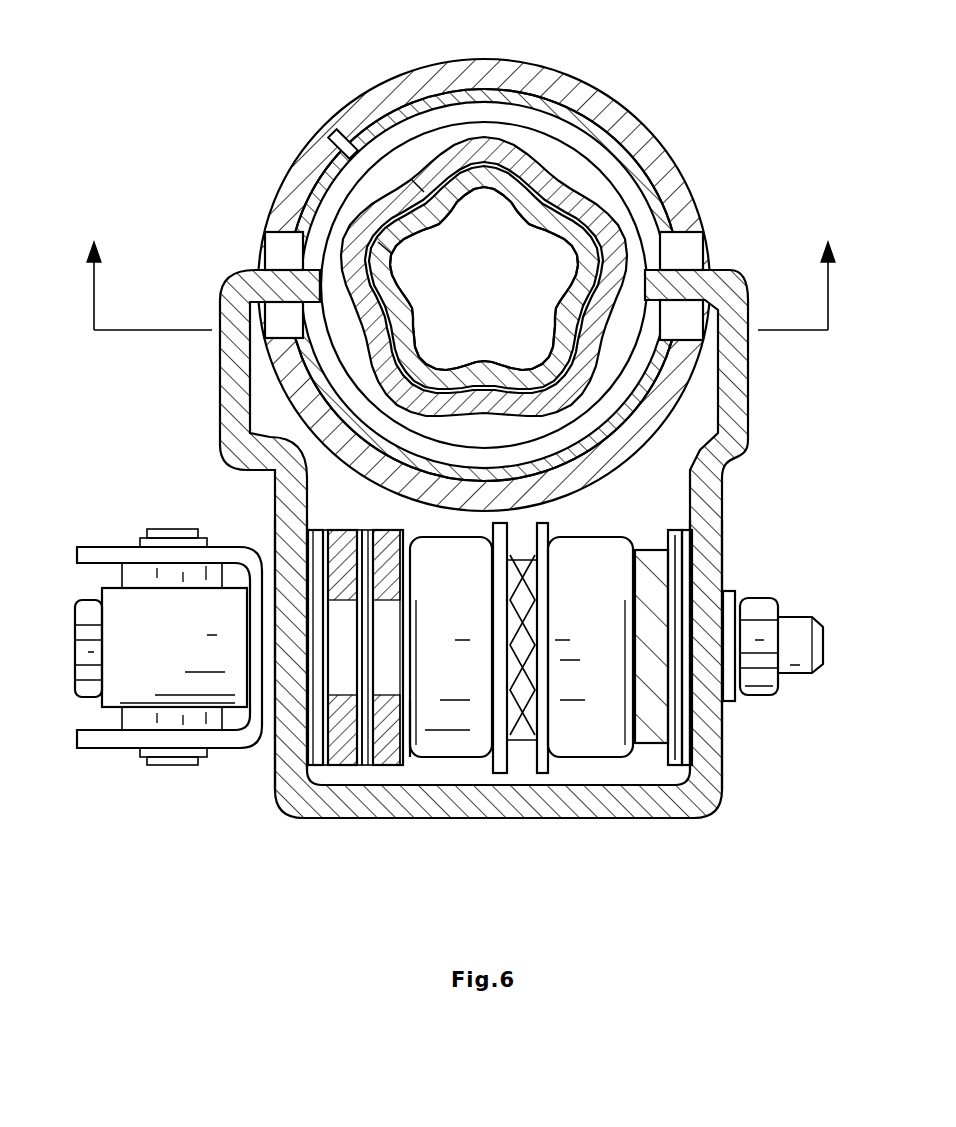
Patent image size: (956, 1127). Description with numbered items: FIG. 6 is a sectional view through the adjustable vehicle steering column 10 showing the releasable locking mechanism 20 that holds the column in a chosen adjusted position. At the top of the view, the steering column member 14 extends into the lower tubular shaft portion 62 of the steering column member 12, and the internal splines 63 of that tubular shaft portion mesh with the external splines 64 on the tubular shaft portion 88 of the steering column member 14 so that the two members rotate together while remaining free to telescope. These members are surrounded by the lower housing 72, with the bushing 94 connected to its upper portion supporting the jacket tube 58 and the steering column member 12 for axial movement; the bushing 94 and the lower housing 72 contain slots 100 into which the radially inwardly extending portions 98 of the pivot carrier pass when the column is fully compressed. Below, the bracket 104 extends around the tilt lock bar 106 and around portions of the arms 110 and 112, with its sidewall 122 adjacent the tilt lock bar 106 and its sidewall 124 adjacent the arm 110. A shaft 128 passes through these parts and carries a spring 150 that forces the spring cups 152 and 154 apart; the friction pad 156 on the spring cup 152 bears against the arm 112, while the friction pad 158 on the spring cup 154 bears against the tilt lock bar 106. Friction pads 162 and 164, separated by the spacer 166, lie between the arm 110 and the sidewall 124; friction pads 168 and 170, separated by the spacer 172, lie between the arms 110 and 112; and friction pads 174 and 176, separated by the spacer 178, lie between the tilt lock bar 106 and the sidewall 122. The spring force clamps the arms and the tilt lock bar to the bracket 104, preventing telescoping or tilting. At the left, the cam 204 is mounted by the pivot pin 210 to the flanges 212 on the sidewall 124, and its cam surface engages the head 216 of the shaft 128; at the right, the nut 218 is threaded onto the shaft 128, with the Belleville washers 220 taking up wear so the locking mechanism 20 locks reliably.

The steering column 10 is at (464, 274).
The steering column member 12 is at (530, 168).
The steering column member 14 is at (486, 186).
The releasable locking mechanism 20 is at (176, 822).
The jacket tube 58 is at (582, 140).
The tubular shaft portion 62 is at (578, 203).
The internal splines 63 is at (418, 186).
The external splines 64 is at (385, 248).
The lower housing 72 is at (426, 84).
The tubular shaft portion 88 is at (590, 227).
The bushing 94 is at (347, 138).
The radially inwardly extending portions 98 is at (270, 285).
The slots 100 is at (270, 250).
The bracket 104 is at (638, 812).
The tilt lock bar 106 is at (650, 728).
The arm 110 is at (345, 548).
The arm 112 is at (412, 762).
The sidewall 122 is at (712, 755).
The sidewall 124 is at (290, 745).
The shaft 128 is at (800, 663).
The spring 150 is at (540, 770).
The spring cup 152 is at (500, 770).
The spring cup 154 is at (578, 740).
The friction pad 156 is at (409, 562).
The friction pad 158 is at (635, 560).
The friction pad 162 is at (316, 768).
The friction pad 164 is at (344, 768).
The spacer 166 is at (326, 768).
The friction pad 168 is at (360, 768).
The friction pad 170 is at (390, 768).
The spacer 172 is at (370, 768).
The friction pad 174 is at (672, 538).
The friction pad 176 is at (686, 545).
The spacer 178 is at (680, 535).
The cam 204 is at (117, 692).
The pivot pin 210 is at (163, 532).
The flanges 212 is at (90, 552).
The head 216 is at (86, 648).
The nut 218 is at (763, 610).
The Belleville washers 220 is at (727, 702).